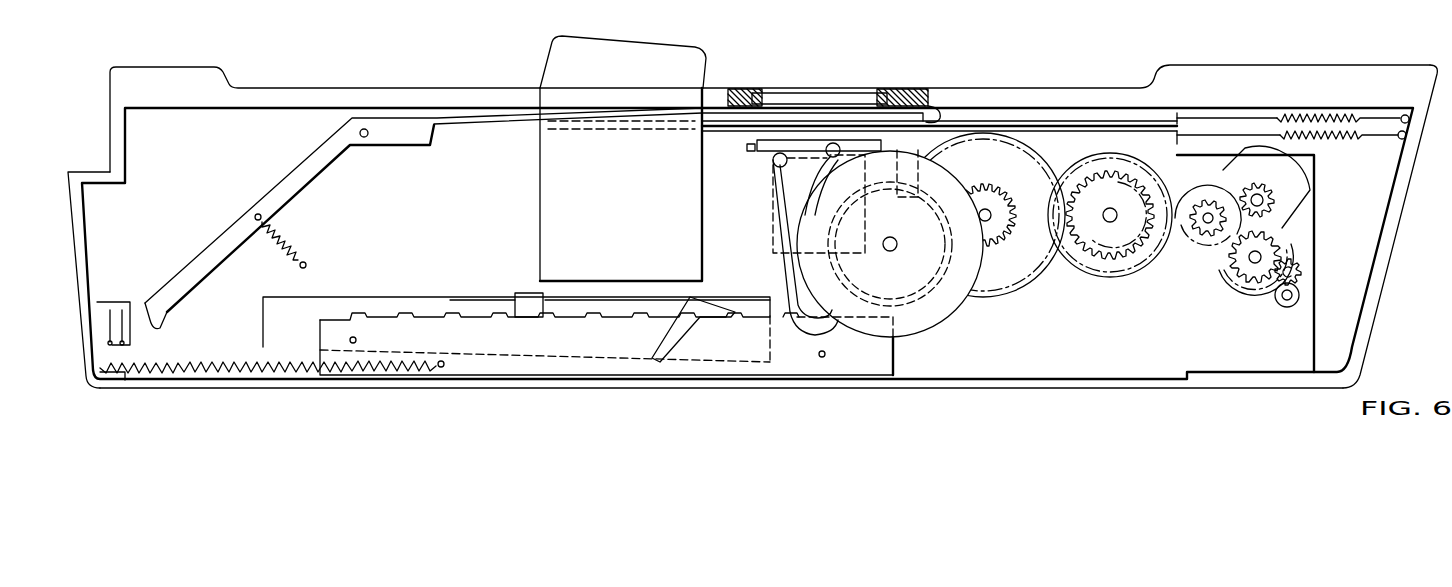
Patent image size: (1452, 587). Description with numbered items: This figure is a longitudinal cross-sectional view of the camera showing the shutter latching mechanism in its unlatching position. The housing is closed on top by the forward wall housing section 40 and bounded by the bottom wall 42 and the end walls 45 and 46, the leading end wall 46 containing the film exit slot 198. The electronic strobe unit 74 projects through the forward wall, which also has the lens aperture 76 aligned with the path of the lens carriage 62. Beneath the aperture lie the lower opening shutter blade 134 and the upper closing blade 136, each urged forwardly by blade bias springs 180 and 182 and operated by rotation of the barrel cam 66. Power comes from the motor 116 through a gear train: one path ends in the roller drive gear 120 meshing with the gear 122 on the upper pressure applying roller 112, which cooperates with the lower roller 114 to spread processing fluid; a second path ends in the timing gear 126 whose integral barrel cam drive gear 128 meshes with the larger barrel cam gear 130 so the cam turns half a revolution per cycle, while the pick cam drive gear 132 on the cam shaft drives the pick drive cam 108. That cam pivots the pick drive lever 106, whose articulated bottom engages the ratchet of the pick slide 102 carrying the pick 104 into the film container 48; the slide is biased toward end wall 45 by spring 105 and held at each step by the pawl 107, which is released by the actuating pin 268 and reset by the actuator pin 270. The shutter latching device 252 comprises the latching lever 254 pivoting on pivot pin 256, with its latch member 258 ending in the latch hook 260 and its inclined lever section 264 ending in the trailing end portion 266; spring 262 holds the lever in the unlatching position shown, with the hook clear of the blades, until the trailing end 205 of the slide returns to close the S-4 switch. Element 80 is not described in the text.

The forward wall housing section 40 is at (415, 96).
The bottom wall 42 is at (880, 388).
The end wall 45 is at (72, 257).
The end wall 46 is at (1388, 248).
The film exit slot 198 is at (1372, 302).
The electronic strobe unit 74 is at (632, 48).
The lens aperture 76 is at (845, 97).
The latch member 258 is at (797, 120).
The latch hook 260 is at (940, 108).
The barrel cam 66 is at (1028, 148).
The upper closing blade 136 is at (1075, 121).
The lower opening shutter blade 134 is at (1062, 138).
The timing gear 126 is at (1140, 153).
The barrel cam drive gear 128 is at (1123, 242).
The barrel cam gear 130 is at (1027, 292).
The pick cam drive gear 132 is at (985, 186).
The pick drive cam 108 is at (952, 303).
The pick drive lever 106 is at (780, 196).
The lens carriage 62 is at (778, 250).
The bracket 80 is at (748, 147).
The blade bias spring 182 is at (1340, 117).
The blade bias spring 180 is at (1342, 137).
The electrical motor 116 is at (1300, 197).
The roller drive gear 120 is at (1243, 272).
The pressure applying roller 112 is at (1300, 268).
The gear 122 is at (1302, 280).
The pressure applying roller 114 is at (1294, 304).
The lever section 264 is at (283, 181).
The latching lever 254 is at (352, 158).
The pivot pin 256 is at (370, 140).
The trailing end portion 266 is at (158, 326).
The spring 262 is at (290, 255).
The shutter latching device 252 is at (320, 212).
The S-4 switch S-4 is at (115, 302).
The spring 105 is at (245, 360).
The film container 48 is at (375, 297).
The pick 104 is at (500, 293).
The trailing end 205 is at (320, 330).
The actuating pin 268 is at (357, 340).
The pawl 107 is at (680, 330).
The actuator pin 270 is at (820, 354).
The pick slide 102 is at (895, 358).